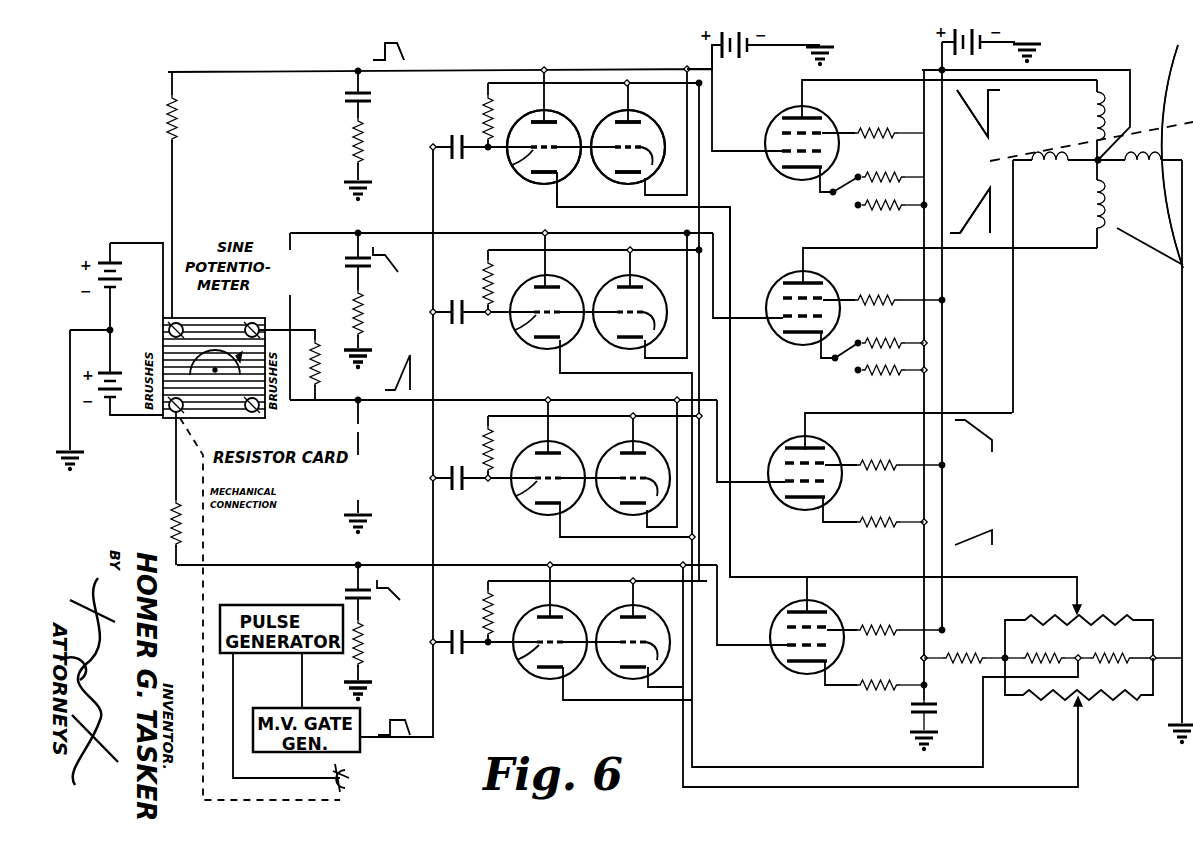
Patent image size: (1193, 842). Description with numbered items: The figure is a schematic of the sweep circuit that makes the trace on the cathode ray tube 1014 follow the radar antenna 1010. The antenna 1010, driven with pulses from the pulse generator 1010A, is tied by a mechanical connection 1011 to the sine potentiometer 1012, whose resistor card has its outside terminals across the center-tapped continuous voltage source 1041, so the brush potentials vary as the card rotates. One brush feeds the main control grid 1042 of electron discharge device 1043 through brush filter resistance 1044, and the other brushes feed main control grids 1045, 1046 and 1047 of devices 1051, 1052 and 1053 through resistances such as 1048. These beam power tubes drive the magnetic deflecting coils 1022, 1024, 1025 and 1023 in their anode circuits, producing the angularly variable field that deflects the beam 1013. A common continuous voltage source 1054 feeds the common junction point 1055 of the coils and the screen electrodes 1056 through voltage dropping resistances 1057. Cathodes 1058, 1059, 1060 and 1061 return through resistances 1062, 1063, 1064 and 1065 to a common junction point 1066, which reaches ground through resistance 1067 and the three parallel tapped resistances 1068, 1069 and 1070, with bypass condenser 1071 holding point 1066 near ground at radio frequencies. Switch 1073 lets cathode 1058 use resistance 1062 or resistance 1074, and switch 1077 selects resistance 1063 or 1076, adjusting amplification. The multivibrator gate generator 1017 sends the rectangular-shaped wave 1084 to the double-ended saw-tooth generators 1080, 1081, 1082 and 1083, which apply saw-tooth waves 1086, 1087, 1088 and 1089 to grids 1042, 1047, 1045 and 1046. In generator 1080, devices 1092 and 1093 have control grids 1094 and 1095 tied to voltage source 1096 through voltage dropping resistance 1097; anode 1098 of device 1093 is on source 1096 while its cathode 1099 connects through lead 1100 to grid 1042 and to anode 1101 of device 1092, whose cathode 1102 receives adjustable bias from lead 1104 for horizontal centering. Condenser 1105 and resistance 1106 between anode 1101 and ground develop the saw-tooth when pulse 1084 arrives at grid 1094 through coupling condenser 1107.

The radar antenna 1010 is at (362, 785).
The pulse generator 1010A is at (283, 605).
The mechanical connection 1011 is at (205, 556).
The sine potentiometer 1012 is at (205, 316).
The cathode ray beam 1013 is at (1040, 152).
The cathode ray tube 1014 is at (1147, 75).
The multivibrator gate generator 1017 is at (292, 706).
The magnetic deflecting coil 1022 is at (1090, 114).
The magnetic deflecting coil 1023 is at (1092, 218).
The magnetic deflecting coil 1024 is at (1045, 165).
The magnetic deflecting coil 1025 is at (1155, 166).
The continuous voltage source 1041 is at (104, 256).
The main control grid 1042 is at (785, 153).
The electron discharge device 1043 is at (785, 112).
The brush filter resistance 1044 is at (176, 123).
The main control grid 1045 is at (792, 488).
The main control grid 1046 is at (792, 652).
The main control grid 1047 is at (786, 322).
The brush filter resistance 1048 is at (320, 364).
The electron discharge device 1051 is at (794, 448).
The electron discharge device 1052 is at (787, 618).
The electron discharge device 1053 is at (792, 282).
The common continuous voltage source 1054 is at (950, 52).
The common junction point 1055 is at (1098, 161).
The screen electrode 1056 is at (829, 629).
The voltage dropping resistance 1057 is at (886, 460).
The cathode 1058 is at (803, 170).
The cathode 1059 is at (806, 342).
The cathode 1060 is at (812, 506).
The cathode 1061 is at (808, 667).
The cathode resistance 1062 is at (905, 172).
The cathode resistance 1063 is at (906, 340).
The cathode resistance 1064 is at (892, 530).
The cathode resistance 1065 is at (882, 686).
The common junction point 1066 is at (921, 656).
The resistance 1067 is at (982, 656).
The tapped resistance 1068 is at (1046, 618).
The tapped resistance 1069 is at (1048, 658).
The tapped resistance 1070 is at (1046, 702).
The bypass condenser 1071 is at (918, 710).
The switch 1073 is at (845, 196).
The resistance 1074 is at (902, 212).
The resistance 1076 is at (903, 380).
The switch 1077 is at (845, 364).
The double-ended saw-tooth generator 1080 is at (585, 110).
The double-ended saw-tooth generator 1081 is at (590, 270).
The double-ended saw-tooth generator 1082 is at (591, 437).
The double-ended saw-tooth generator 1083 is at (591, 603).
The rectangular-shaped wave 1084 is at (370, 690).
The saw-tooth wave 1086 is at (372, 46).
The saw-tooth wave 1087 is at (381, 297).
The saw-tooth wave 1088 is at (370, 348).
The saw-tooth wave 1089 is at (385, 628).
The electron discharge device 1092 is at (552, 208).
The electron discharge device 1093 is at (562, 162).
The control grid 1094 is at (499, 413).
The control grid 1095 is at (640, 422).
The voltage source 1096 is at (755, 56).
The voltage dropping resistance 1097 is at (483, 118).
The anode 1098 is at (638, 122).
The cathode 1099 is at (628, 178).
The lead 1100 is at (708, 60).
The anode 1101 is at (537, 122).
The cathode 1102 is at (542, 182).
The lead 1104 is at (733, 208).
The condenser 1105 is at (346, 95).
The resistance 1106 is at (352, 140).
The coupling condenser 1107 is at (448, 140).